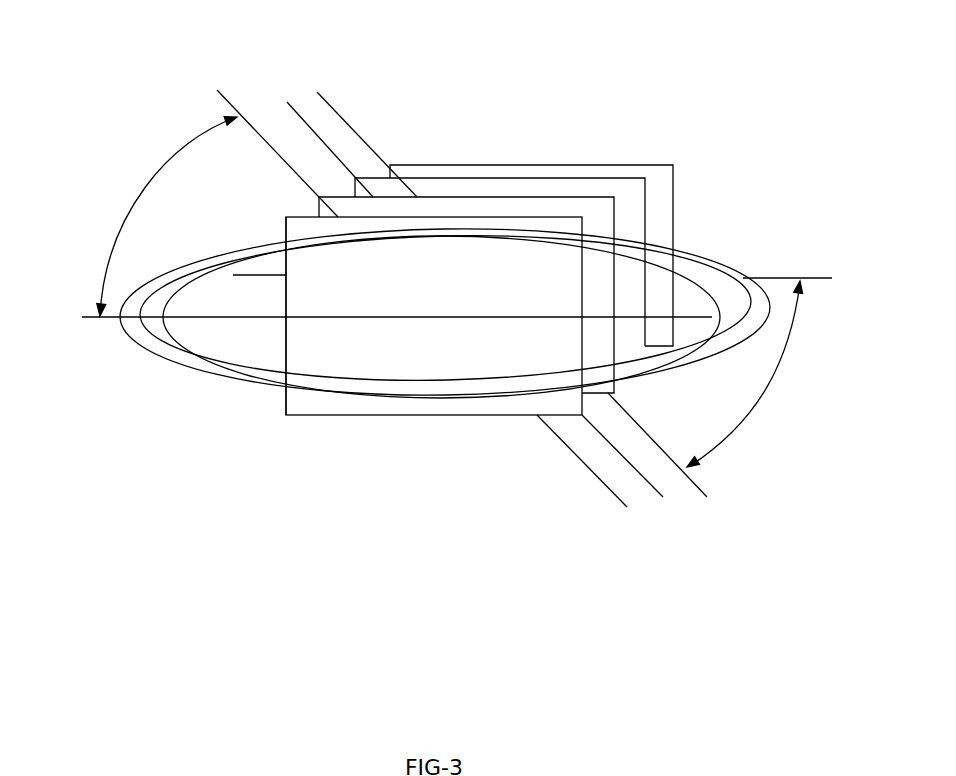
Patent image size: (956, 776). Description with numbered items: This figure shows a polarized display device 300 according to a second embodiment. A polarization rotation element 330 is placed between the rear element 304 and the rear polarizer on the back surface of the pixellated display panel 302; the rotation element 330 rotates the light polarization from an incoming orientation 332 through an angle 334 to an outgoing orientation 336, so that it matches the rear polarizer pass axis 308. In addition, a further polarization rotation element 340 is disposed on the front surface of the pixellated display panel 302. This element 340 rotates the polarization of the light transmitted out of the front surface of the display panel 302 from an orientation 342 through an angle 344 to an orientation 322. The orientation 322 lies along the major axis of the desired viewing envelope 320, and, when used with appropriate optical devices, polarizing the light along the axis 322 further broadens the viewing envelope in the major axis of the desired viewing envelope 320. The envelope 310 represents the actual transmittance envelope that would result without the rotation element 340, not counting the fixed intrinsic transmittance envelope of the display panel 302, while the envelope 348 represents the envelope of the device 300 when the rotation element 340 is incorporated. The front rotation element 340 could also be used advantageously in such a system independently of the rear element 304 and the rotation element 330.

The display device 300 is at (513, 33).
The pixellated display panel 302 is at (317, 200).
The rear element 304 is at (650, 164).
The rear polarizer pass axis 308 is at (645, 479).
The transmittance envelope 310 is at (170, 342).
The desired viewing envelope 320 is at (213, 252).
The orientation 322 is at (88, 320).
The polarization rotation element 330 is at (628, 353).
The incoming orientation 332 is at (782, 277).
The angle 334 is at (767, 390).
The outgoing orientation 336 is at (700, 488).
The polarization rotation element 340 is at (465, 415).
The orientation 342 is at (233, 105).
The angle 344 is at (130, 218).
The envelope 348 is at (312, 378).